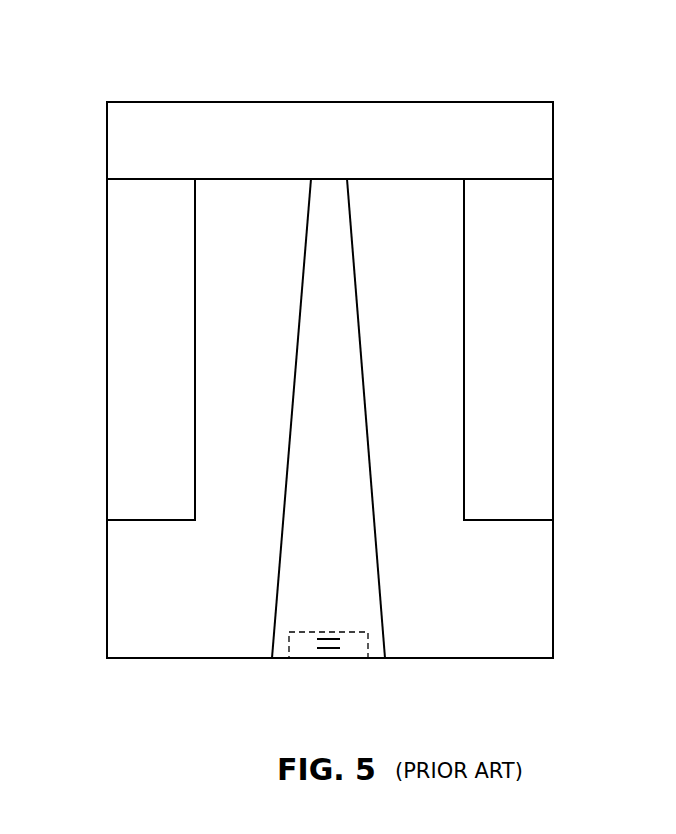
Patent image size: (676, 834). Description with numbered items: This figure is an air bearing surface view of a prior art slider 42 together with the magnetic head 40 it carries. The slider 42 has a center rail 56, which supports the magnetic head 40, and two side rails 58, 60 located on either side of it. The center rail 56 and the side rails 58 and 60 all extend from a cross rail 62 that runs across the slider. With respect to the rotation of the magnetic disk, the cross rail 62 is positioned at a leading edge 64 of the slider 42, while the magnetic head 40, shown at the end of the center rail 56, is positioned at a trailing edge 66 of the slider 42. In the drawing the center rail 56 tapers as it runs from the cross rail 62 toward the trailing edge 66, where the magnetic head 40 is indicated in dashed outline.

The magnetic head 40 is at (307, 650).
The slider 42 is at (98, 608).
The center rail 56 is at (315, 290).
The side rail 58 is at (123, 260).
The side rail 60 is at (536, 260).
The cross rail 62 is at (252, 112).
The leading edge 64 is at (430, 101).
The trailing edge 66 is at (450, 658).